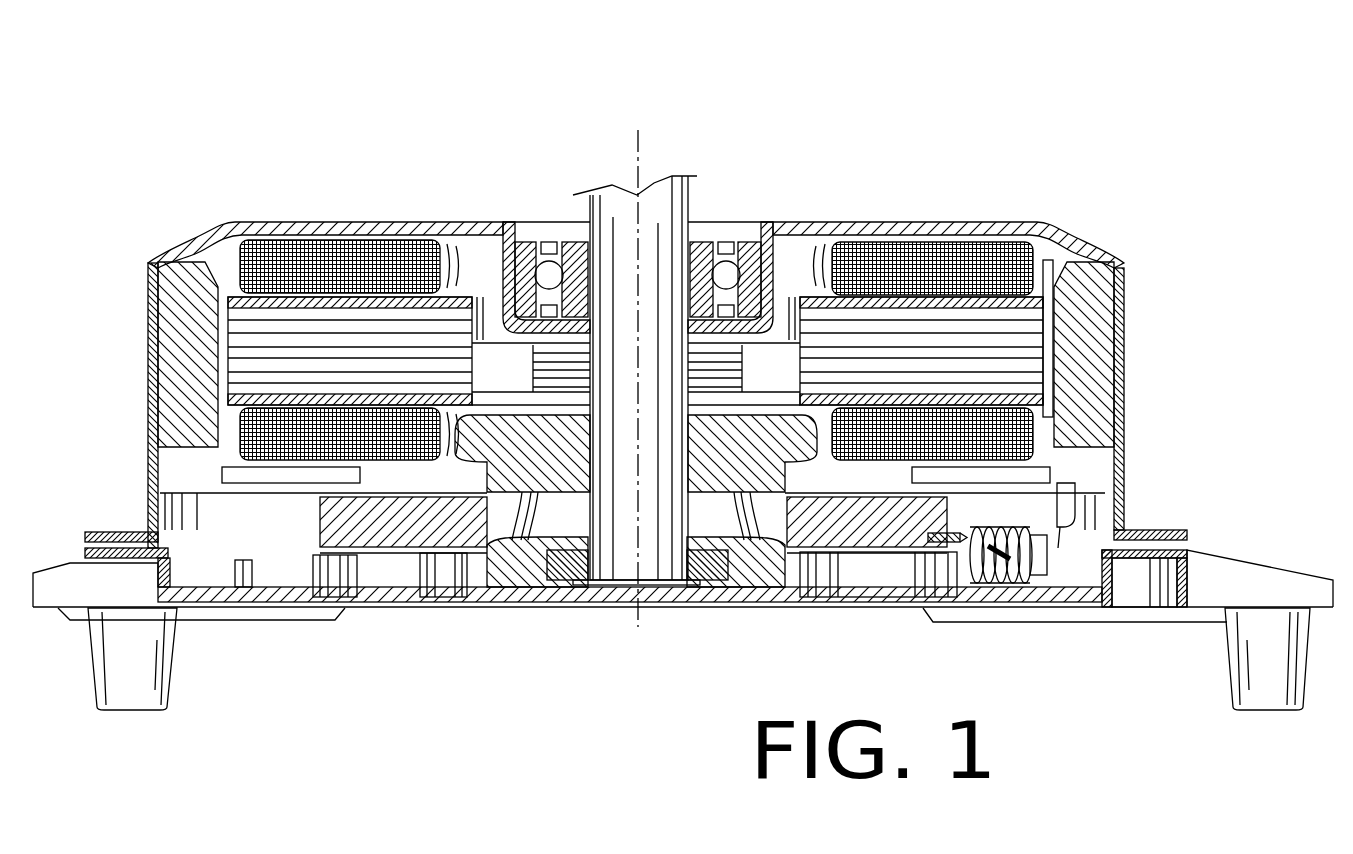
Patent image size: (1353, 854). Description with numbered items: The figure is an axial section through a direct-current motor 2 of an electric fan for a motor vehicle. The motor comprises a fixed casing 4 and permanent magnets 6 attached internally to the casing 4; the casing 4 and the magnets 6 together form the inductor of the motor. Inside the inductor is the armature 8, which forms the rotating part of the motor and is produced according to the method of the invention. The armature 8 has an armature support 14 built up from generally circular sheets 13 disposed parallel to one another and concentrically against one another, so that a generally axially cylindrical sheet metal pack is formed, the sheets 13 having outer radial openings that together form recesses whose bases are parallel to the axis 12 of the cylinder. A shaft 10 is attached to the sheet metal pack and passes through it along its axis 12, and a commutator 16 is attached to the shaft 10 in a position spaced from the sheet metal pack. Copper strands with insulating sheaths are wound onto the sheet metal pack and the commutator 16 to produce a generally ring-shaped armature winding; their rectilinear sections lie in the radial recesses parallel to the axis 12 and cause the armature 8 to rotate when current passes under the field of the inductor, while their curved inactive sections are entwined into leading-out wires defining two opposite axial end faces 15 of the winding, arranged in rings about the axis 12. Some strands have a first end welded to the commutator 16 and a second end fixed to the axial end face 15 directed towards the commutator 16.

The direct-current motor 2 is at (407, 637).
The fixed casing 4 is at (303, 227).
The permanent magnets 6 is at (182, 298).
The armature 8 is at (953, 257).
The shaft 10 is at (690, 217).
The axis 12 is at (637, 150).
The sheets 13 is at (1023, 362).
The armature support 14 is at (837, 338).
The axial end faces 15 is at (360, 237).
The commutator 16 is at (513, 470).